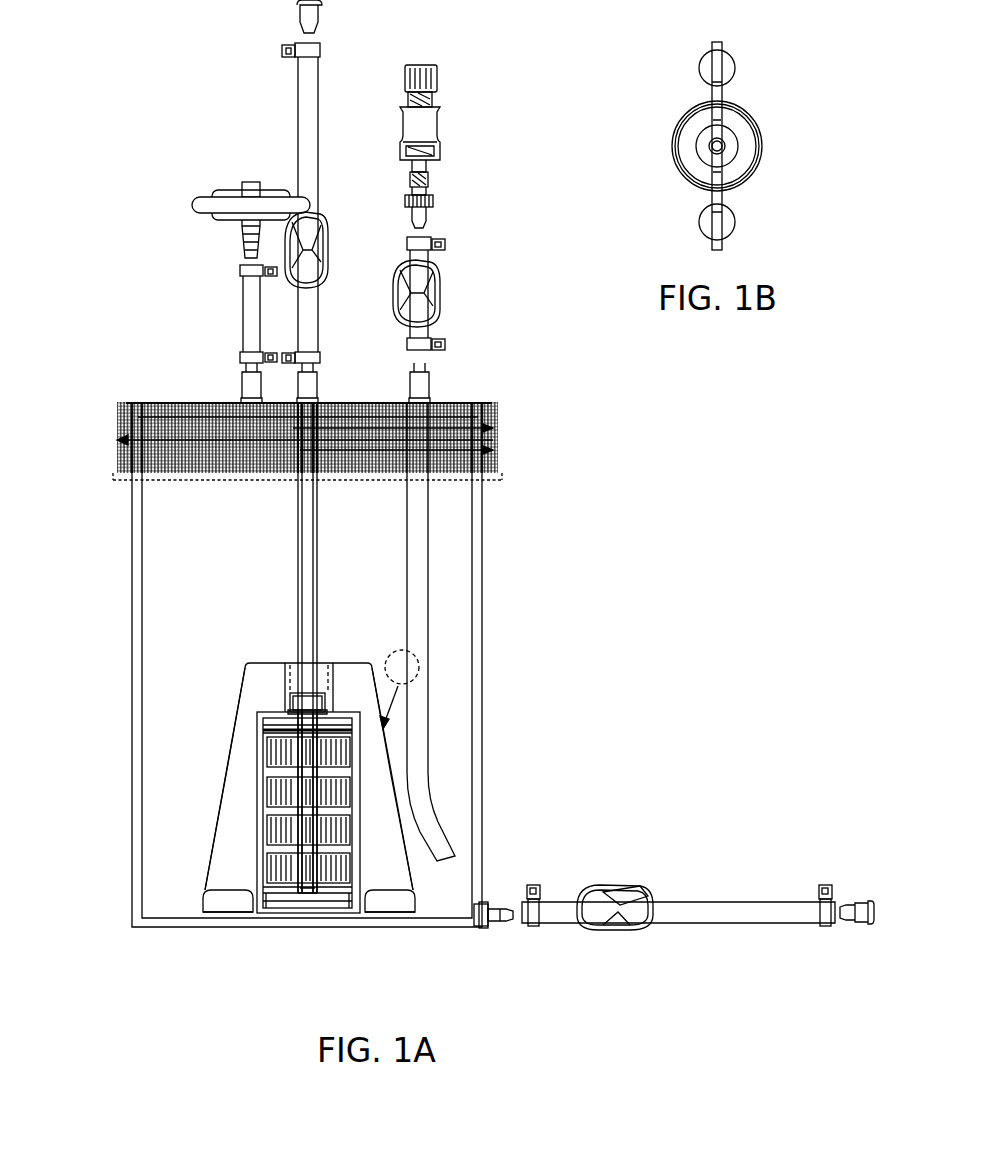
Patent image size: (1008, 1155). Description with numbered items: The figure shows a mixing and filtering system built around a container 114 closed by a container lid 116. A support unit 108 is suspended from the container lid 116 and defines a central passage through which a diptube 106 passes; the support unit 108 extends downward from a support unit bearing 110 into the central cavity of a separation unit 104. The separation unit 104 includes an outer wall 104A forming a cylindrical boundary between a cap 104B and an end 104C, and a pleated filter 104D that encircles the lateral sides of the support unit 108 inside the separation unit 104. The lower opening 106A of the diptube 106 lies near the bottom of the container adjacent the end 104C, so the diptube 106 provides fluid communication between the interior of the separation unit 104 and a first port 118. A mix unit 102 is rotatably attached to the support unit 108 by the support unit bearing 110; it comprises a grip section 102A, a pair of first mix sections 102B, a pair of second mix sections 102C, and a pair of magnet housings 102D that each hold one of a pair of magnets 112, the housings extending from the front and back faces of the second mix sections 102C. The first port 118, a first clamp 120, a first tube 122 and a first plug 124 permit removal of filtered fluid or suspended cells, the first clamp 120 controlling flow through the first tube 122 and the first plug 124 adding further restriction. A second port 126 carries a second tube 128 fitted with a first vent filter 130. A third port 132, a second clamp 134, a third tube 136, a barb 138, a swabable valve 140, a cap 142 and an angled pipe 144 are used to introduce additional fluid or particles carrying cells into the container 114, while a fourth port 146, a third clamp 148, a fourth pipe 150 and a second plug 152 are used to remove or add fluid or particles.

In FIG. 1A, the mix unit 102 is at (377, 782).
In FIG. 1A, the grip section 102A is at (333, 680).
In FIG. 1B, the grip section 102A is at (724, 126).
In FIG. 1A, the first mix sections 102B is at (250, 688).
In FIG. 1B, the first mix sections 102B is at (710, 105).
In FIG. 1A, the second mix sections 102C is at (222, 822).
In FIG. 1B, the second mix sections 102C is at (705, 63).
In FIG. 1A, the magnet housings 102D is at (220, 902).
In FIG. 1B, the magnet housings 102D is at (733, 58).
In FIG. 1A, the separation unit 104 is at (262, 800).
In FIG. 1B, the separation unit 104 is at (758, 172).
In FIG. 1A, the outer wall 104A is at (263, 817).
In FIG. 1B, the outer wall 104A is at (762, 132).
In FIG. 1A, the cap 104B is at (263, 725).
In FIG. 1A, the end 104C is at (338, 895).
In FIG. 1A, the filter 104D is at (275, 873).
In FIG. 1A, the diptube 106 is at (314, 582).
In FIG. 1A, the lower opening 106A is at (310, 893).
In FIG. 1A, the support unit 108 is at (318, 533).
In FIG. 1A, the support unit bearing 110 is at (302, 693).
In FIG. 1A, the magnets 112 is at (228, 892).
In FIG. 1A, the container 114 is at (482, 637).
In FIG. 1A, the container lid 116 is at (498, 410).
In FIG. 1A, the first port 118 is at (318, 383).
In FIG. 1A, the first clamp 120 is at (322, 218).
In FIG. 1A, the first tube 122 is at (298, 90).
In FIG. 1A, the first plug 124 is at (298, 16).
In FIG. 1A, the second port 126 is at (242, 382).
In FIG. 1A, the second tube 128 is at (242, 314).
In FIG. 1A, the first vent filter 130 is at (251, 182).
In FIG. 1A, the third port 132 is at (428, 380).
In FIG. 1A, the second clamp 134 is at (442, 312).
In FIG. 1A, the third tube 136 is at (405, 257).
In FIG. 1A, the barb 138 is at (435, 202).
In FIG. 1A, the swabable valve 140 is at (438, 135).
In FIG. 1A, the cap 142 is at (420, 65).
In FIG. 1A, the angled pipe 144 is at (428, 530).
In FIG. 1A, the fourth port 146 is at (484, 926).
In FIG. 1A, the third clamp 148 is at (618, 930).
In FIG. 1A, the fourth pipe 150 is at (754, 920).
In FIG. 1A, the second plug 152 is at (845, 924).